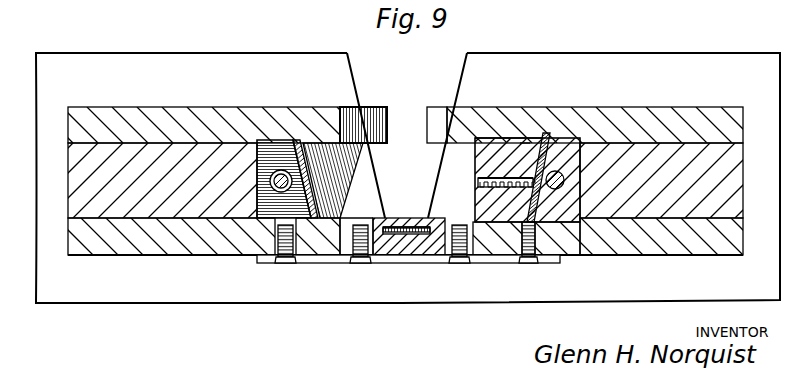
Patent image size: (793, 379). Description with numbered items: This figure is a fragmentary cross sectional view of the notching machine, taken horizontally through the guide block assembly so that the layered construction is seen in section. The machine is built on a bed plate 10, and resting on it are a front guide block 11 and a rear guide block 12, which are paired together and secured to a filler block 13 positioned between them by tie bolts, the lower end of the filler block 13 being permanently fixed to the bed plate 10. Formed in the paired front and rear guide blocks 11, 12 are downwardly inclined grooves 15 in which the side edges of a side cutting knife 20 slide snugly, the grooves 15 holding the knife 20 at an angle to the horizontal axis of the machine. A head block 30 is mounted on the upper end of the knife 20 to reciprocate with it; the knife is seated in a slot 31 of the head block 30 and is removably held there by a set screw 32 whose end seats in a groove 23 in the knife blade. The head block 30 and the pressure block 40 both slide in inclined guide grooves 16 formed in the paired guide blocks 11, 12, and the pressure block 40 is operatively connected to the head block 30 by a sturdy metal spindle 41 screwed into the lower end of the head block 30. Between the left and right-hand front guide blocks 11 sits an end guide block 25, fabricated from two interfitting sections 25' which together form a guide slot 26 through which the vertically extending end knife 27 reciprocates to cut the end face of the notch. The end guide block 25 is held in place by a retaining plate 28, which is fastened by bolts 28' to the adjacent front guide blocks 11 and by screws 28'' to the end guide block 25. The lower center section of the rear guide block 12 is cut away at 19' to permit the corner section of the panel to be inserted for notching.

The bed plate 10 is at (156, 62).
The front guide block 11 is at (97, 246).
The rear guide block 12 is at (167, 115).
The filler block 13 is at (72, 197).
The inclined groove 15 is at (298, 140).
The inclined guide groove 16 is at (480, 140).
The cut away portion 19' is at (432, 84).
The side cutting knife 20 is at (318, 196).
The groove 23 is at (505, 222).
The end guide block 25 is at (408, 275).
The section 25' is at (376, 214).
The guide slot 26 is at (411, 233).
The end knife 27 is at (402, 236).
The retaining plate 28 is at (261, 280).
The bolt 28' is at (310, 291).
The screw 28'' is at (383, 283).
The head block 30 is at (585, 140).
The slot 31 is at (525, 140).
The set screw 32 is at (471, 189).
The pressure block 40 is at (268, 223).
The spindle 41 is at (273, 191).